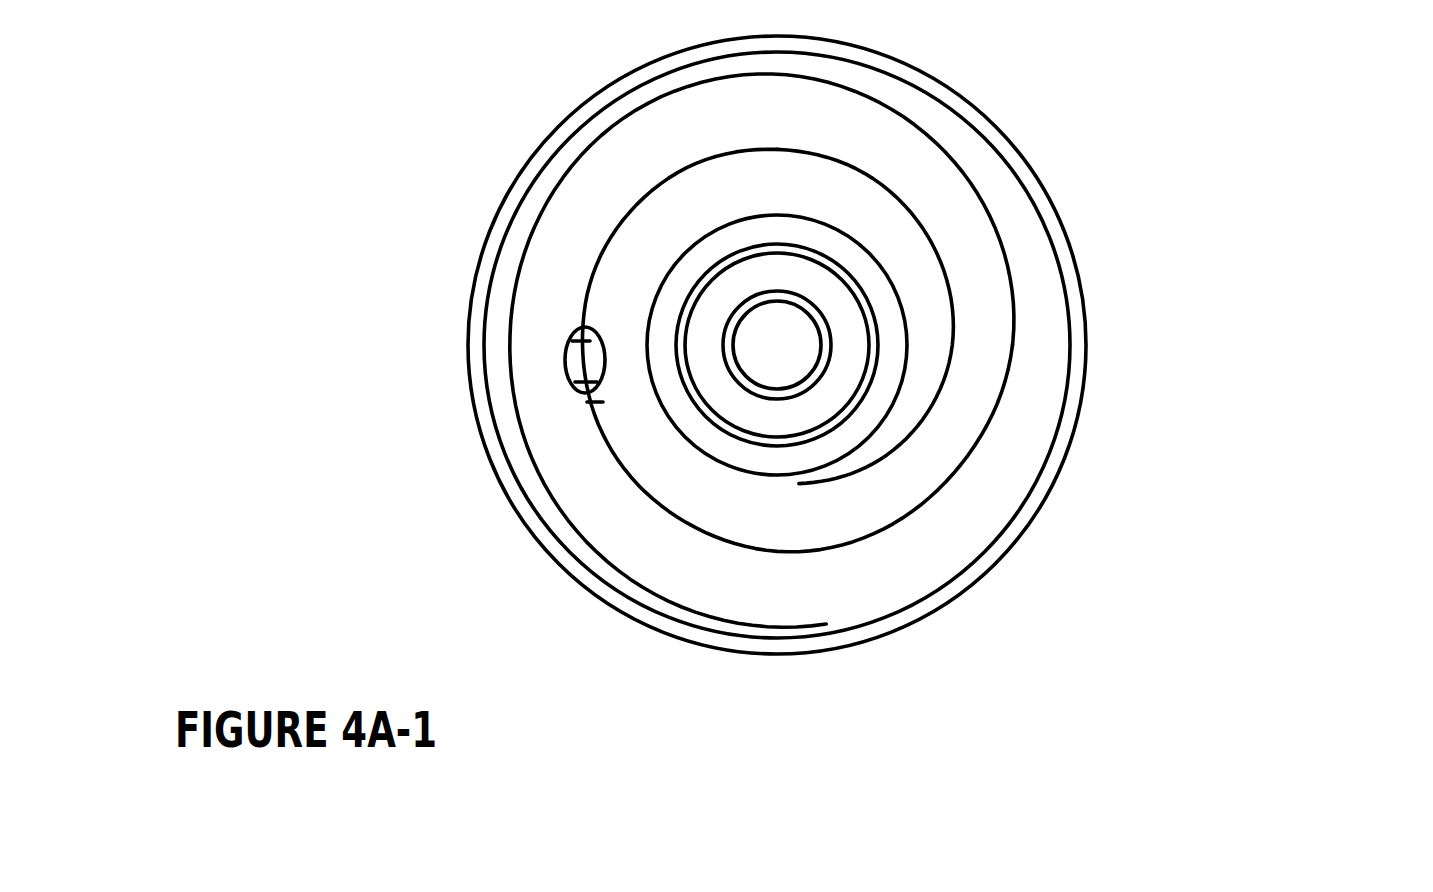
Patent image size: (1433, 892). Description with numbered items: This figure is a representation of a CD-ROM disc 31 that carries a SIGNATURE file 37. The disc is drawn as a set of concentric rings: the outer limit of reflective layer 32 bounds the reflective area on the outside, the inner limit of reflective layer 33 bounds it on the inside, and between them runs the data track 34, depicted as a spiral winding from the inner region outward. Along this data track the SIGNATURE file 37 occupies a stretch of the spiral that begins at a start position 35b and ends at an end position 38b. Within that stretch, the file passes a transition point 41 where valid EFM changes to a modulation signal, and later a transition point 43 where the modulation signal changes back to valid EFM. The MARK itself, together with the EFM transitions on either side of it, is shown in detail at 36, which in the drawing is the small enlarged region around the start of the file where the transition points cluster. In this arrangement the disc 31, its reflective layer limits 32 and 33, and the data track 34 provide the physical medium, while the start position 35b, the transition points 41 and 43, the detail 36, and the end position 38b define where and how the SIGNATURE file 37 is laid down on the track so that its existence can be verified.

The CD-ROM disc 31 is at (626, 79).
The outer limit of reflective layer 32 is at (1020, 163).
The inner limit of reflective layer 33 is at (658, 276).
The data track 34 is at (814, 488).
The start position of SIGNATURE file 35b is at (572, 323).
The detail of MARK and adjacent EFM transitions 36 is at (562, 380).
The SIGNATURE file 37 is at (792, 556).
The end position of SIGNATURE file 38b is at (1020, 320).
The transition point from valid EFM to modulation signal 41 is at (552, 355).
The transition point from modulation signal to valid EFM 43 is at (573, 404).